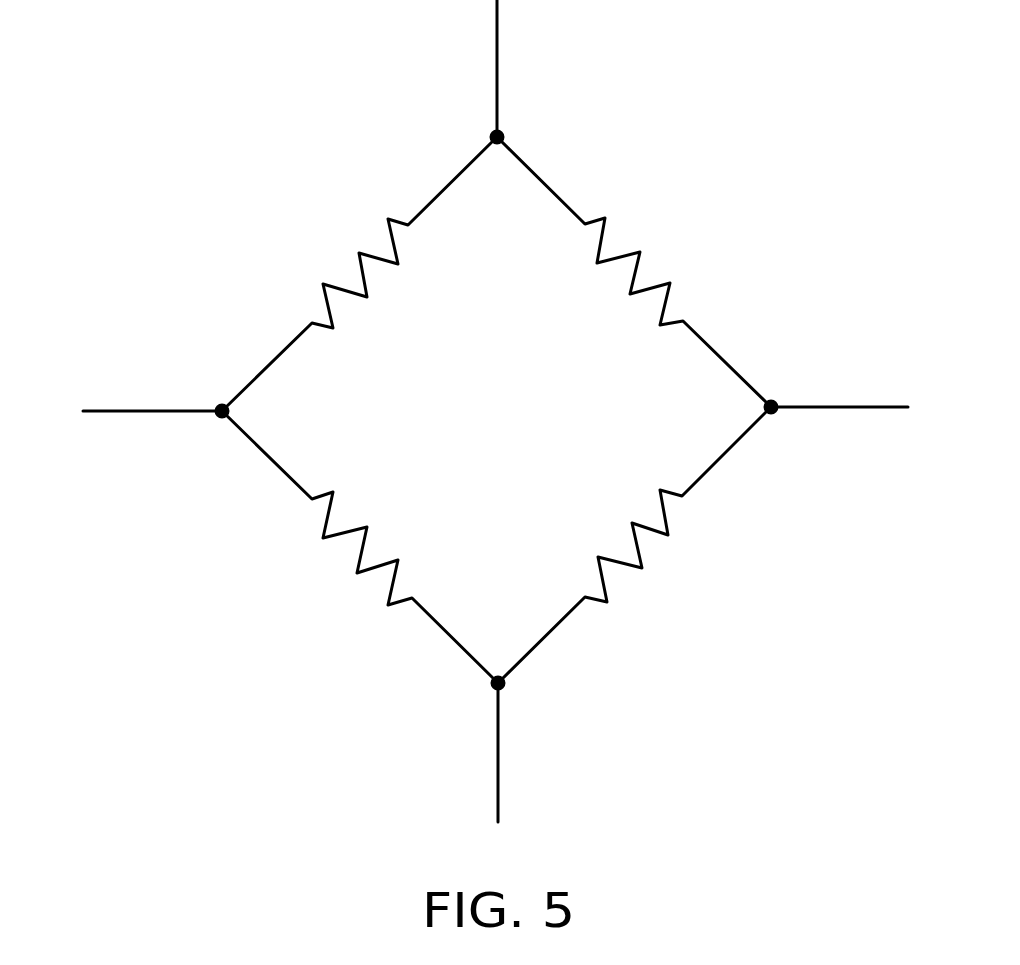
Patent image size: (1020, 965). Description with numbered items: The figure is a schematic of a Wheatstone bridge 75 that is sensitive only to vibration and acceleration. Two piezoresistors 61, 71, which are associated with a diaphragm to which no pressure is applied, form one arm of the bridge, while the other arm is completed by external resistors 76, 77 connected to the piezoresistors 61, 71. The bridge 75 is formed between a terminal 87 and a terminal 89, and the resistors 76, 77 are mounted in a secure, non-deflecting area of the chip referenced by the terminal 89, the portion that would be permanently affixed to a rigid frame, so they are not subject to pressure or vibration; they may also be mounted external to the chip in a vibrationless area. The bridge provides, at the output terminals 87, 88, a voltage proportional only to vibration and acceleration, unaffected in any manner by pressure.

The piezoresistor 61 is at (353, 268).
The piezoresistor 71 is at (398, 605).
The Wheatstone bridge 75 is at (515, 423).
The external resistor 76 is at (657, 280).
The external resistor 77 is at (667, 515).
The terminal 87 is at (497, 137).
The output terminal 88 is at (222, 411).
The terminal 89 is at (498, 683).